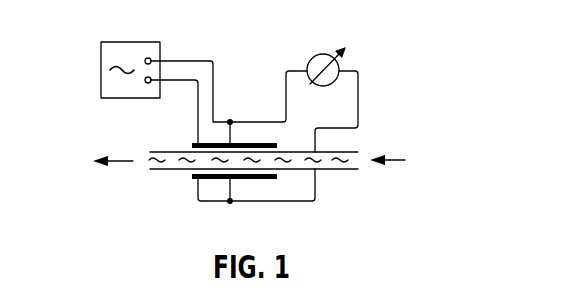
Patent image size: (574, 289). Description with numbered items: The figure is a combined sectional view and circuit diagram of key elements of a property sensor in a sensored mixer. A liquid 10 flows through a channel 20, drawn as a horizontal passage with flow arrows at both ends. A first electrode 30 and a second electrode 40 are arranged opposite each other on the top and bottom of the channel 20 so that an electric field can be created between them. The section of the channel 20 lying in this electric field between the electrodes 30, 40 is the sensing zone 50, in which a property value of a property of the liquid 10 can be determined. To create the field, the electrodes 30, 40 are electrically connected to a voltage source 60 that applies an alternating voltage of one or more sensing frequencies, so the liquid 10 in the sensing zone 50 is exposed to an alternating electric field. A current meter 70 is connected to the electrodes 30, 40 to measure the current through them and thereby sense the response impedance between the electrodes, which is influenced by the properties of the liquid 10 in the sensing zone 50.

The liquid 10 is at (320, 168).
The channel 20 is at (355, 152).
The first electrode 30 is at (193, 143).
The second electrode 40 is at (193, 180).
The sensing zone 50 is at (285, 152).
The voltage source 60 is at (125, 42).
The current meter 70 is at (313, 58).